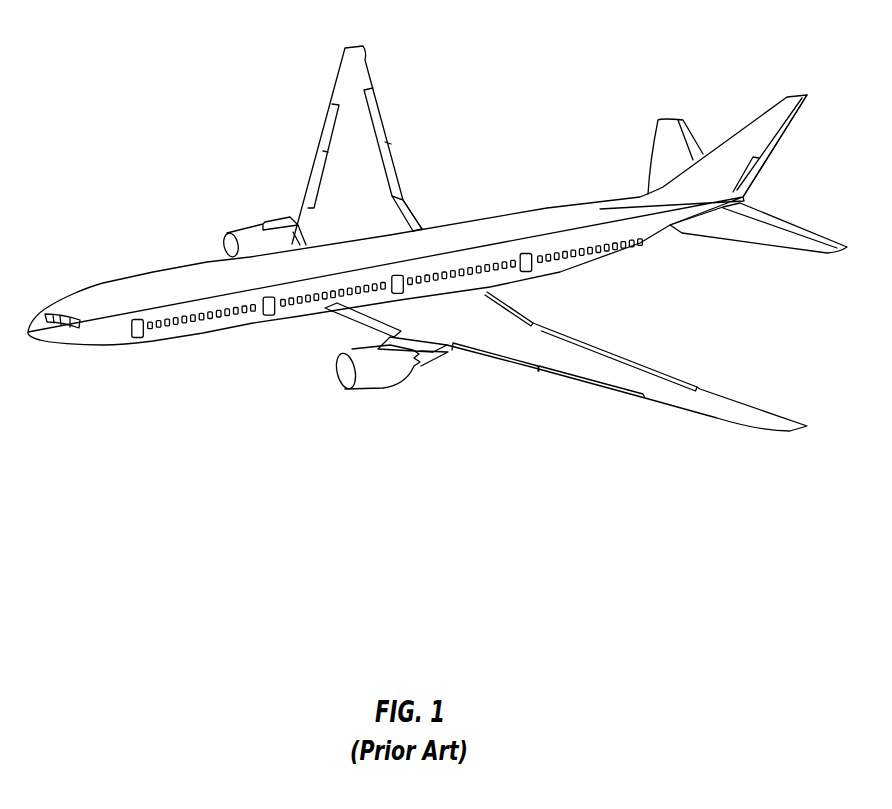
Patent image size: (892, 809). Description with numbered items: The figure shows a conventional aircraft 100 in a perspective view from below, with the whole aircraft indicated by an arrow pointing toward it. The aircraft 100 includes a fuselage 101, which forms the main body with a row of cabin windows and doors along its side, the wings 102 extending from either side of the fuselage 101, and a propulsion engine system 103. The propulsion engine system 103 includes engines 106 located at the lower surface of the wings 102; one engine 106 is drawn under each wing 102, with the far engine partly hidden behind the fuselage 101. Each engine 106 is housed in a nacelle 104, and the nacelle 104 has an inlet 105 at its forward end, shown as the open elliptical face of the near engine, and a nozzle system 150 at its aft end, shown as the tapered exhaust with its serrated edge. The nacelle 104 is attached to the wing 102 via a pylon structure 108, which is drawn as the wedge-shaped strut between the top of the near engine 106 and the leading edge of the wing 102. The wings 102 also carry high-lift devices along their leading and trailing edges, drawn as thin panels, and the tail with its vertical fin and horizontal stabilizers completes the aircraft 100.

The aircraft 100 is at (150, 58).
The fuselage 101 is at (188, 268).
The wings 102 is at (375, 171).
The propulsion engine system 103 is at (368, 398).
The nacelle 104 is at (380, 388).
The inlet 105 is at (337, 388).
The engines 106 is at (353, 350).
The pylon structure 108 is at (409, 342).
The nozzle system 150 is at (431, 357).